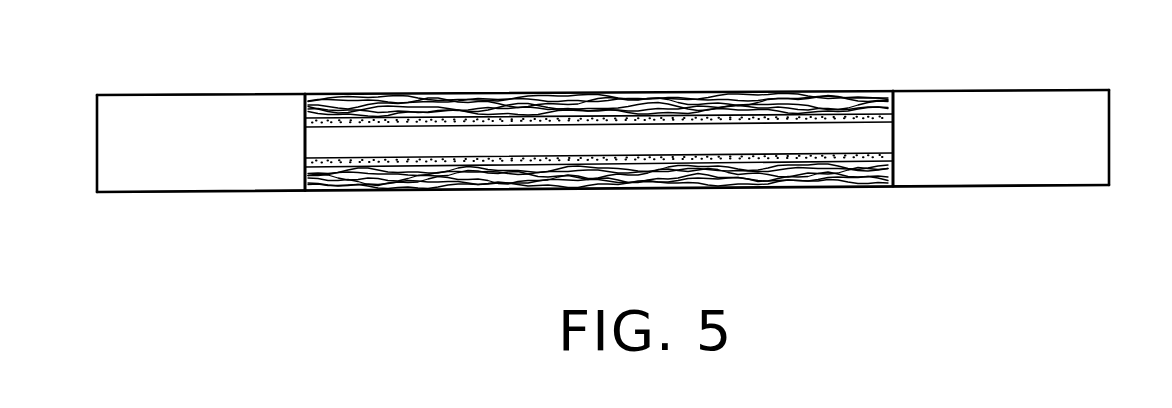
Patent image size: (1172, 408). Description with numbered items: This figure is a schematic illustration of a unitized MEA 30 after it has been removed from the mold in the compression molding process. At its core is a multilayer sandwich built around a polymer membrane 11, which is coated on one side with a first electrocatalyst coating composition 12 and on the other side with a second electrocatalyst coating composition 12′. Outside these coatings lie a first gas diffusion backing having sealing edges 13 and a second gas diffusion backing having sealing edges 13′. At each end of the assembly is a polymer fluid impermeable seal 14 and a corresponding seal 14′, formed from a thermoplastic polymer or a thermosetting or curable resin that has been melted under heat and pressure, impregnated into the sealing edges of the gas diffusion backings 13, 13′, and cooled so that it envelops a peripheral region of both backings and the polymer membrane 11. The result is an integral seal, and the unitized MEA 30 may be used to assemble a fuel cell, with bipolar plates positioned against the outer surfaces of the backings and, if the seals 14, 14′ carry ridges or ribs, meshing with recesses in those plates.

The polymer membrane 11 is at (730, 140).
The first electrocatalyst coating composition 12 is at (568, 162).
The second electrocatalyst coating composition 12′ is at (558, 122).
The first gas diffusion backing having sealing edges 13 is at (420, 177).
The second gas diffusion backing having sealing edges 13′ is at (408, 108).
The polymer fluid impermeable seal 14 is at (119, 104).
The seal 14′ is at (1088, 97).
The unitized MEA 30 is at (647, 206).